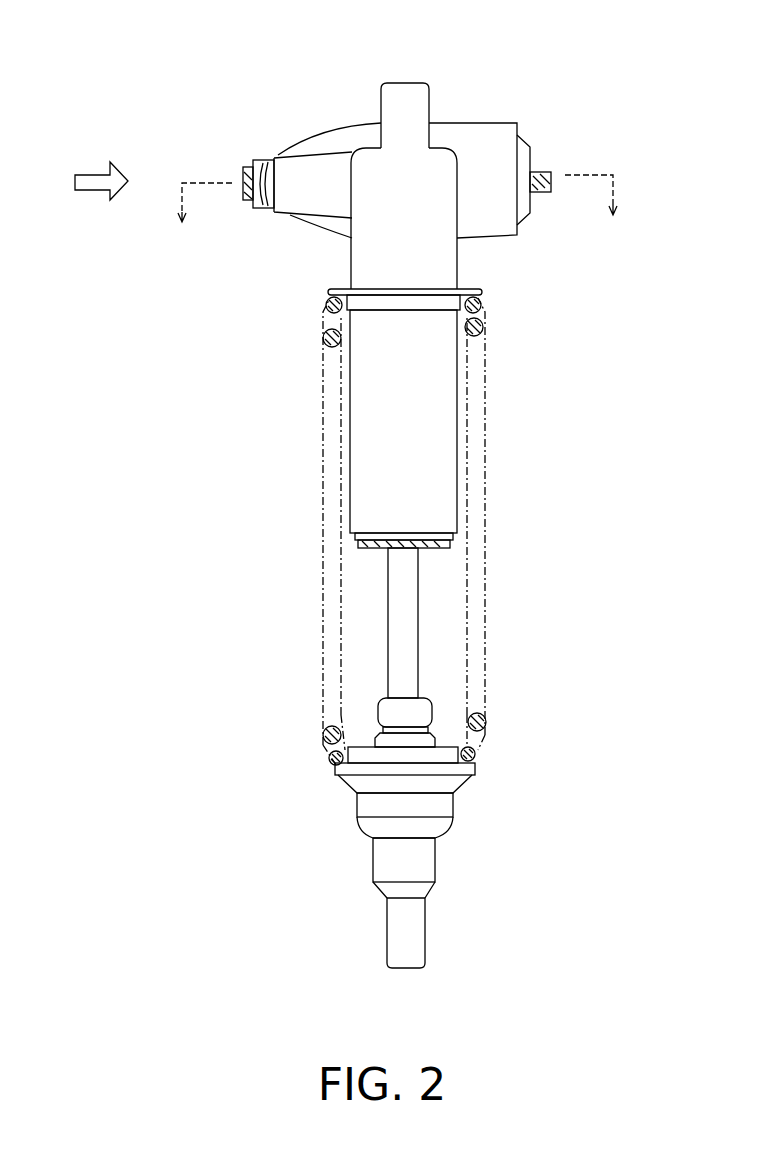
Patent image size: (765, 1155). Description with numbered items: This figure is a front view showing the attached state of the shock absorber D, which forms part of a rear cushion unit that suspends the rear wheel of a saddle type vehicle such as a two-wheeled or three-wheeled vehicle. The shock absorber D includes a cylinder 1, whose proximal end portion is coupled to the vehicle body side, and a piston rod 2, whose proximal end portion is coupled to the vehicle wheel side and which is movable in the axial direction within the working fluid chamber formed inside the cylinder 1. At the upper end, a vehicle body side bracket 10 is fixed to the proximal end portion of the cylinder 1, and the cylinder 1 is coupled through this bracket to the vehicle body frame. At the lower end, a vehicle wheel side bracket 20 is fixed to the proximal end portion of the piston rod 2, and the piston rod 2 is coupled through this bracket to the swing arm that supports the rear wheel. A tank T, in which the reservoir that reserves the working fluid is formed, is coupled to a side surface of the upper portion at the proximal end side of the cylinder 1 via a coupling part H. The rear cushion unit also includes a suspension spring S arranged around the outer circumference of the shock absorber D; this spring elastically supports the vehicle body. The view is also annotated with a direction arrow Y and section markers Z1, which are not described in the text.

The vehicle body side bracket 10 is at (415, 98).
The tank T is at (490, 147).
The coupling part H is at (285, 167).
The suspension spring S is at (485, 325).
The shock absorber D is at (347, 472).
The cylinder 1 is at (438, 465).
The piston rod 2 is at (405, 638).
The vehicle wheel side bracket 20 is at (415, 943).
The direction Y is at (98, 170).
The section line Z1 is at (394, 215).